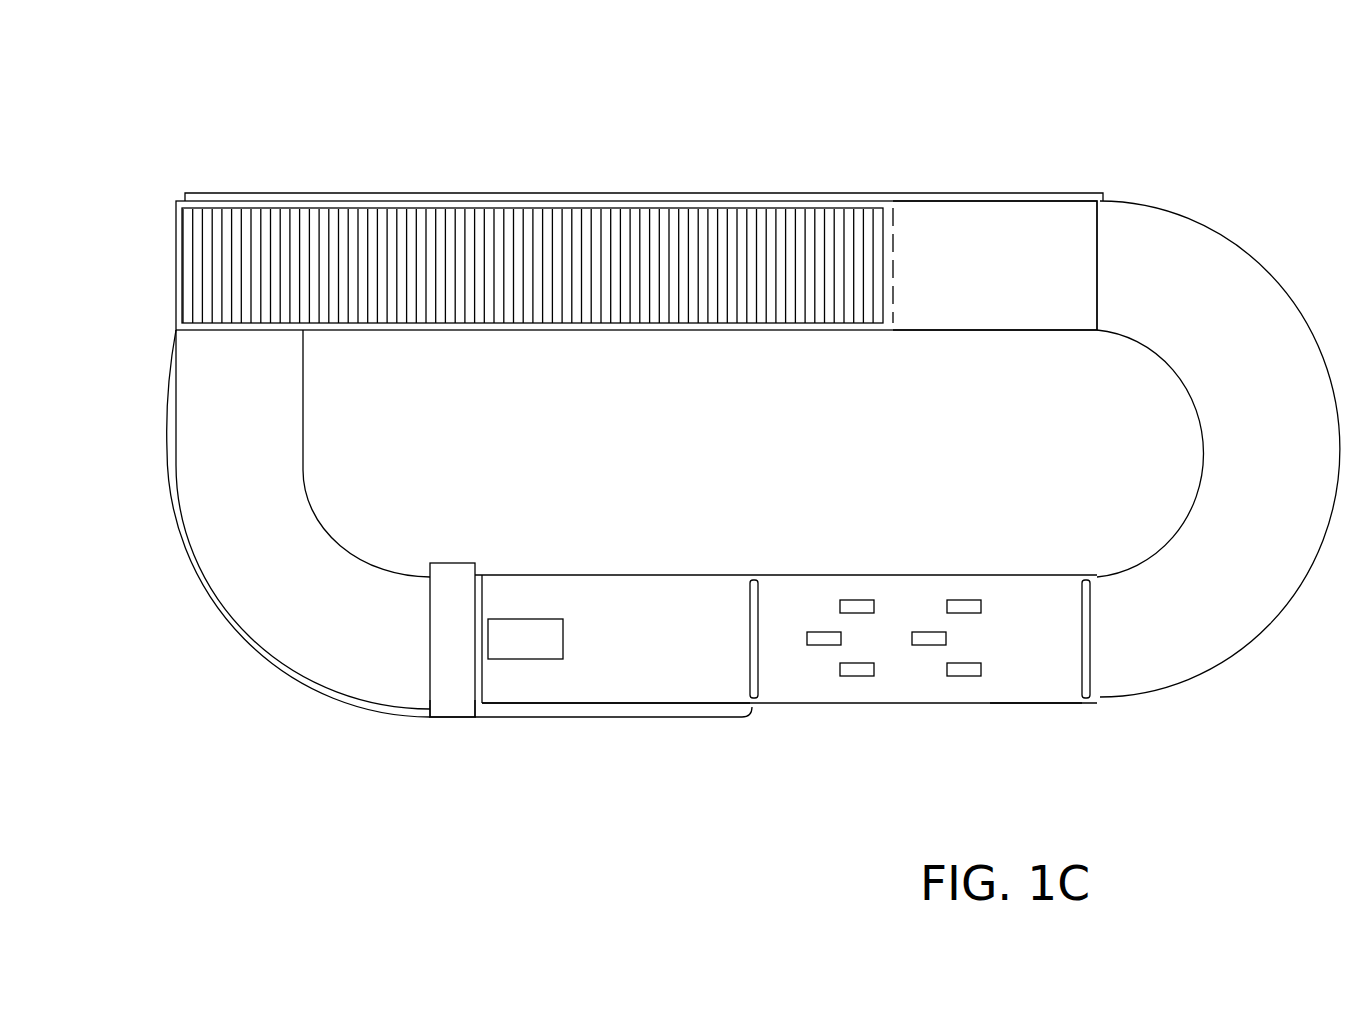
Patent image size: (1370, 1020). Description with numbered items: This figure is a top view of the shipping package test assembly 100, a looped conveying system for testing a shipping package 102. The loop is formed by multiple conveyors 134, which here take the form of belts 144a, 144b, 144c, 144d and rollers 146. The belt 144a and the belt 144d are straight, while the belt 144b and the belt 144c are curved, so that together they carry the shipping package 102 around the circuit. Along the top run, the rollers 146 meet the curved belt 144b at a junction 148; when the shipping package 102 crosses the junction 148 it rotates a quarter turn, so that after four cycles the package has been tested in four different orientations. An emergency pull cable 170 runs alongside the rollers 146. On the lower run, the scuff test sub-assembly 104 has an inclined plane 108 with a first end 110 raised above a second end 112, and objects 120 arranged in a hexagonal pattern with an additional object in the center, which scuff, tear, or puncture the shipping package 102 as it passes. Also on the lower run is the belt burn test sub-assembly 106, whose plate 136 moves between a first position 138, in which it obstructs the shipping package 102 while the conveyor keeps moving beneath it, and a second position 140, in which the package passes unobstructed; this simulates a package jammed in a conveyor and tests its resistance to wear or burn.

The shipping package test assembly 100 is at (1220, 82).
The shipping package 102 is at (520, 660).
The scuff test sub-assembly 104 is at (893, 727).
The belt burn test sub-assembly 106 is at (460, 828).
The inclined plane 108 is at (1020, 675).
The first end 110 is at (1093, 655).
The second end 112 is at (760, 680).
The objects 120 is at (912, 575).
The conveyors 134 is at (481, 745).
The plate 136 is at (452, 703).
The first position 138 is at (455, 563).
The second position 140 is at (330, 655).
The belt 144a is at (686, 685).
The curved belt 144b is at (240, 575).
The curved belt 144c is at (1148, 230).
The belt 144d is at (1048, 228).
The rollers 146 is at (457, 208).
The junction 148 is at (243, 326).
The emergency pull cable 170 is at (745, 193).